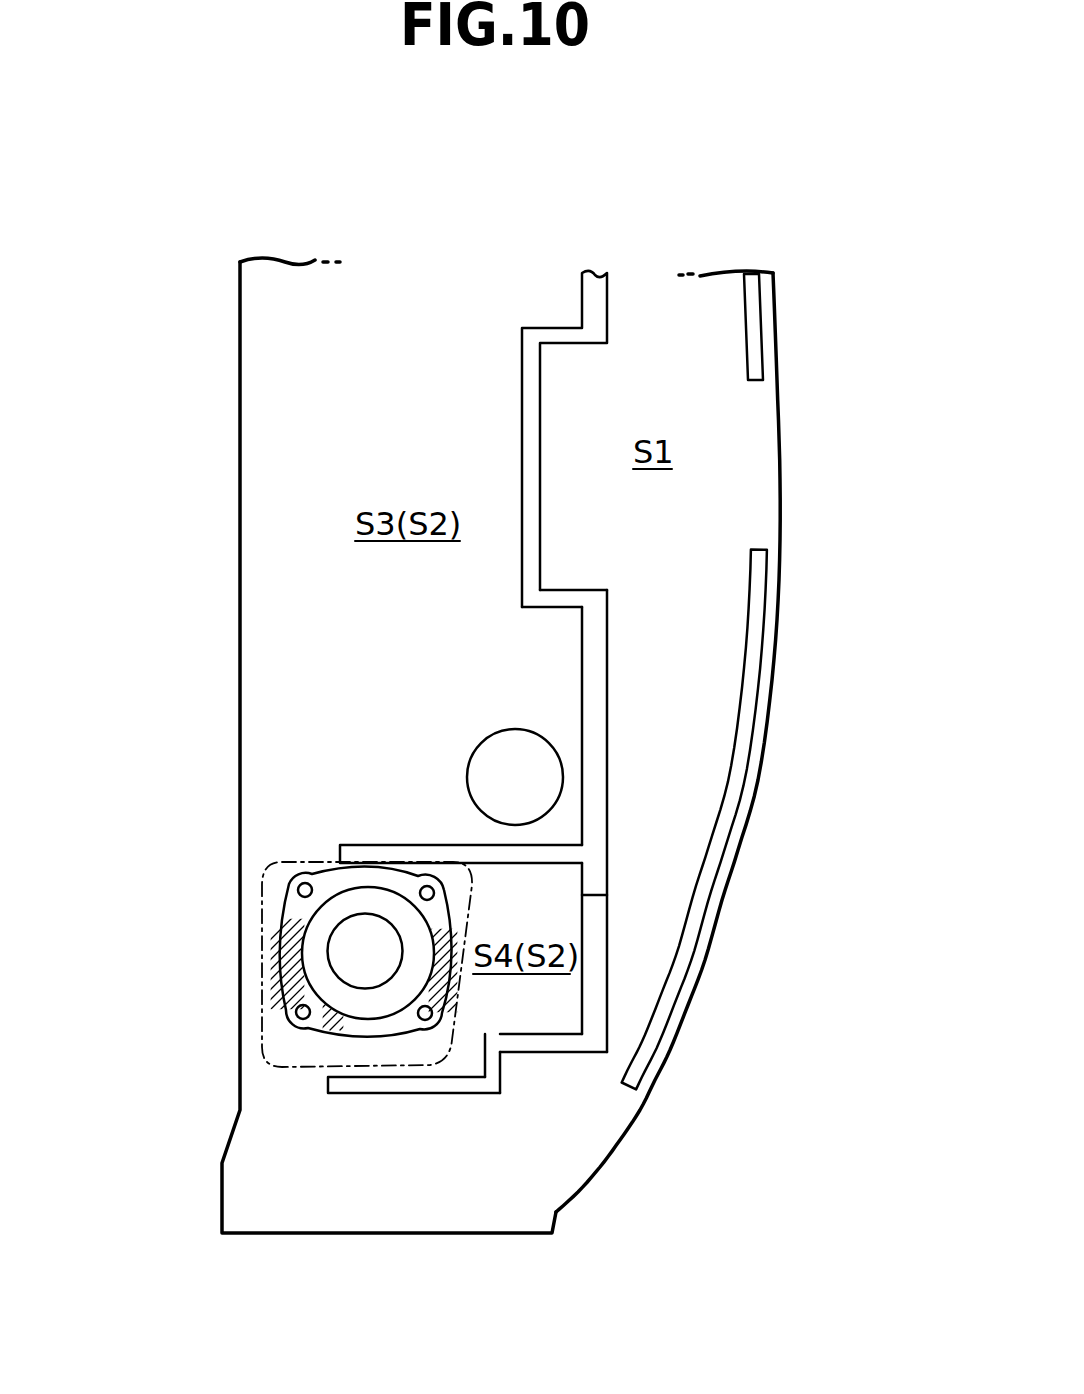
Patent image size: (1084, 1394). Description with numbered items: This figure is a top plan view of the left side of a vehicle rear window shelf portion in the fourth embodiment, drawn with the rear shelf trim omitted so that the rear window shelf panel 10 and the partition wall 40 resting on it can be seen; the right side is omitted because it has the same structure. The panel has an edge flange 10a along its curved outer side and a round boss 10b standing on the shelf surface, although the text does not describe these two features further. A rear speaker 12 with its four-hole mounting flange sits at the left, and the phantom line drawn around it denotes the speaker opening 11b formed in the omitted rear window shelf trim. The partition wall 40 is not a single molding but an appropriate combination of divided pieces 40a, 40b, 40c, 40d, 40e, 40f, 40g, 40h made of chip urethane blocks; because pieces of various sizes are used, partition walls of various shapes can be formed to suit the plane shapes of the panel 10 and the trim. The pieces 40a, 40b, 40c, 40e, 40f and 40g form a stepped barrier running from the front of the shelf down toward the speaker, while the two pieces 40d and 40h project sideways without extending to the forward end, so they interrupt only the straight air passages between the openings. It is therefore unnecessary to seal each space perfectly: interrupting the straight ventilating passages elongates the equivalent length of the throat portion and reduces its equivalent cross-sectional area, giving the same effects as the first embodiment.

The rear window shelf panel 10 is at (480, 1207).
The flange of casing 10a is at (760, 356).
The cylindrical boss 10b is at (480, 748).
The speaker opening 11b is at (265, 878).
The rear speaker 12 is at (290, 980).
The partition wall 40 is at (640, 682).
The divided piece 40a is at (530, 342).
The divided piece 40b is at (571, 589).
The divided piece 40c is at (606, 797).
The divided piece 40d is at (570, 853).
The divided piece 40e is at (596, 963).
The divided piece 40f is at (557, 1043).
The divided piece 40g is at (495, 1093).
The divided piece 40h is at (390, 1087).